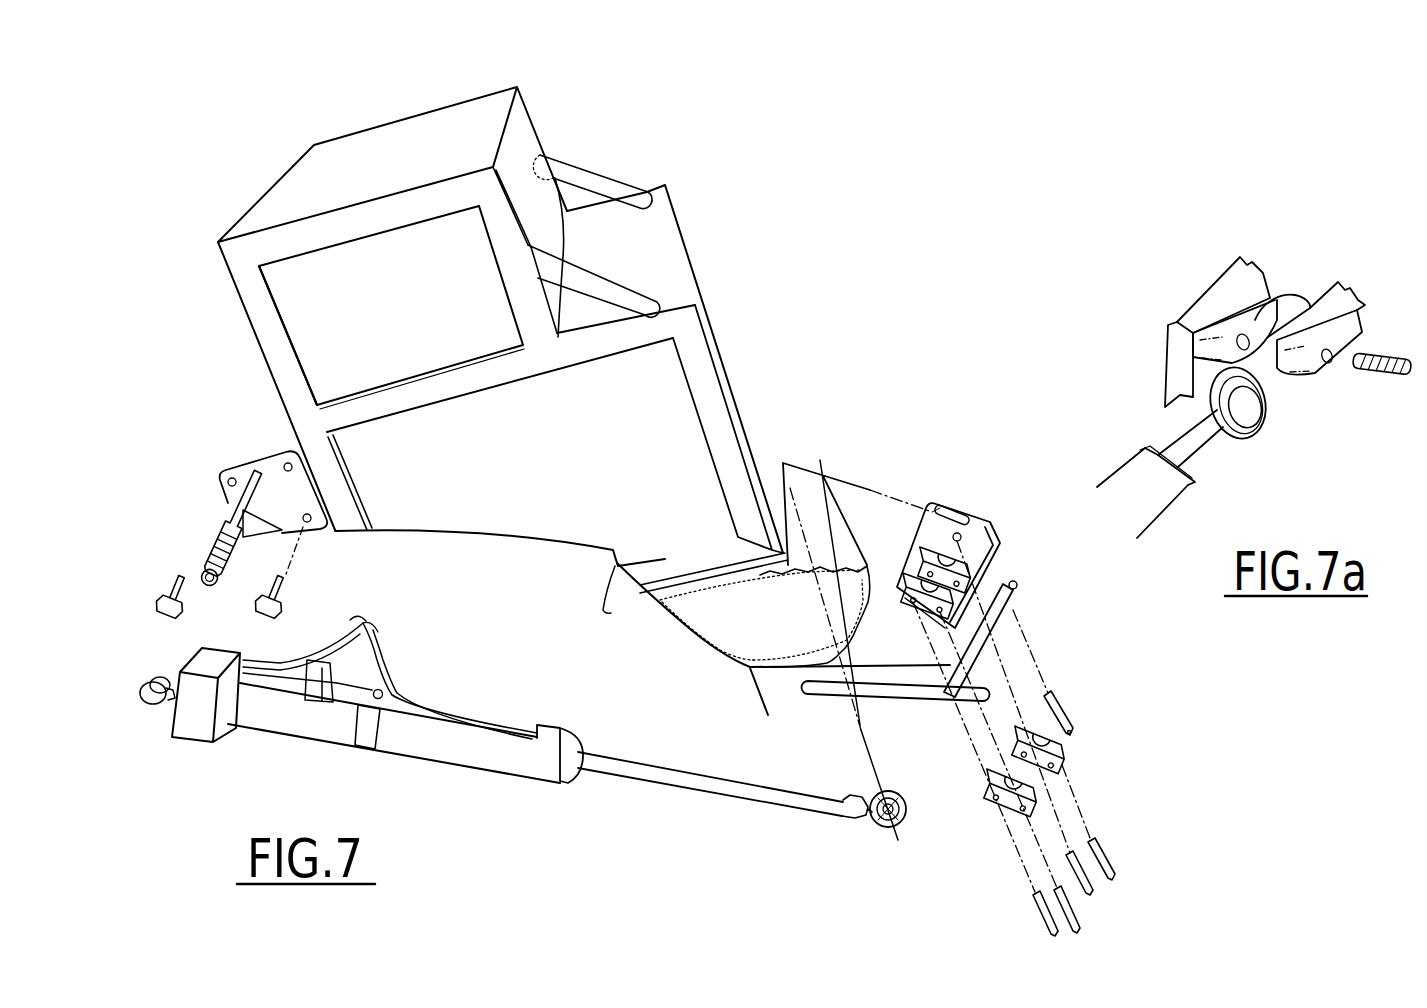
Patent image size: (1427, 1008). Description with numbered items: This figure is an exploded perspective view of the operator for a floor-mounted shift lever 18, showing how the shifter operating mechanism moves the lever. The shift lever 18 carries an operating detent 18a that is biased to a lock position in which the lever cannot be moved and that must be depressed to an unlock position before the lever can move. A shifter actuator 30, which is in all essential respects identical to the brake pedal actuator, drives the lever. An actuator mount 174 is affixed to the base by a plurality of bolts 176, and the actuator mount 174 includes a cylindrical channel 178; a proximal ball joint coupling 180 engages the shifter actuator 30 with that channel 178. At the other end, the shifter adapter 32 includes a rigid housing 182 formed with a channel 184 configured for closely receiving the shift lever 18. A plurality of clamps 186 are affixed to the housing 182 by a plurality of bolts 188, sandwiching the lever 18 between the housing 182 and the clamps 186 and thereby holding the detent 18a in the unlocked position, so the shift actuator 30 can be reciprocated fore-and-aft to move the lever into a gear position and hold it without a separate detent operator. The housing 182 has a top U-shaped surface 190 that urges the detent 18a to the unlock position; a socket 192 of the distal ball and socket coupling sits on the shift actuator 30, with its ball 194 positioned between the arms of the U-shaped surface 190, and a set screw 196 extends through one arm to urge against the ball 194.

In FIG. 7, the shift lever 18 is at (1007, 608).
In FIG. 7, the operating detent 18a is at (1017, 588).
In FIG. 7, the shifter actuator 30 is at (523, 762).
In FIG. 7, the shifter adapter 32 is at (957, 471).
In FIG. 7, the actuator mount 174 is at (304, 502).
In FIG. 7, the bolts 176 is at (277, 600).
In FIG. 7, the cylindrical channel 178 is at (218, 540).
In FIG. 7, the proximal ball joint coupling 180 is at (158, 677).
In FIG. 7, the rigid housing 182 is at (990, 518).
In FIG. 7, the channel 184 is at (933, 542).
In FIG. 7, the clamps 186 is at (1068, 770).
In FIG. 7, the bolts 188 is at (1108, 860).
In FIG. 7, the U-shaped surface 190 is at (993, 552).
In FIG. 7A, the U-shaped surface 190 is at (1273, 282).
In FIG. 7, the socket 192 is at (906, 823).
In FIG. 7A, the socket 192 is at (1233, 437).
In FIG. 7, the ball 194 is at (950, 510).
In FIG. 7A, the ball 194 is at (1265, 430).
In FIG. 7, the set screw 196 is at (1058, 702).
In FIG. 7A, the set screw 196 is at (1373, 370).